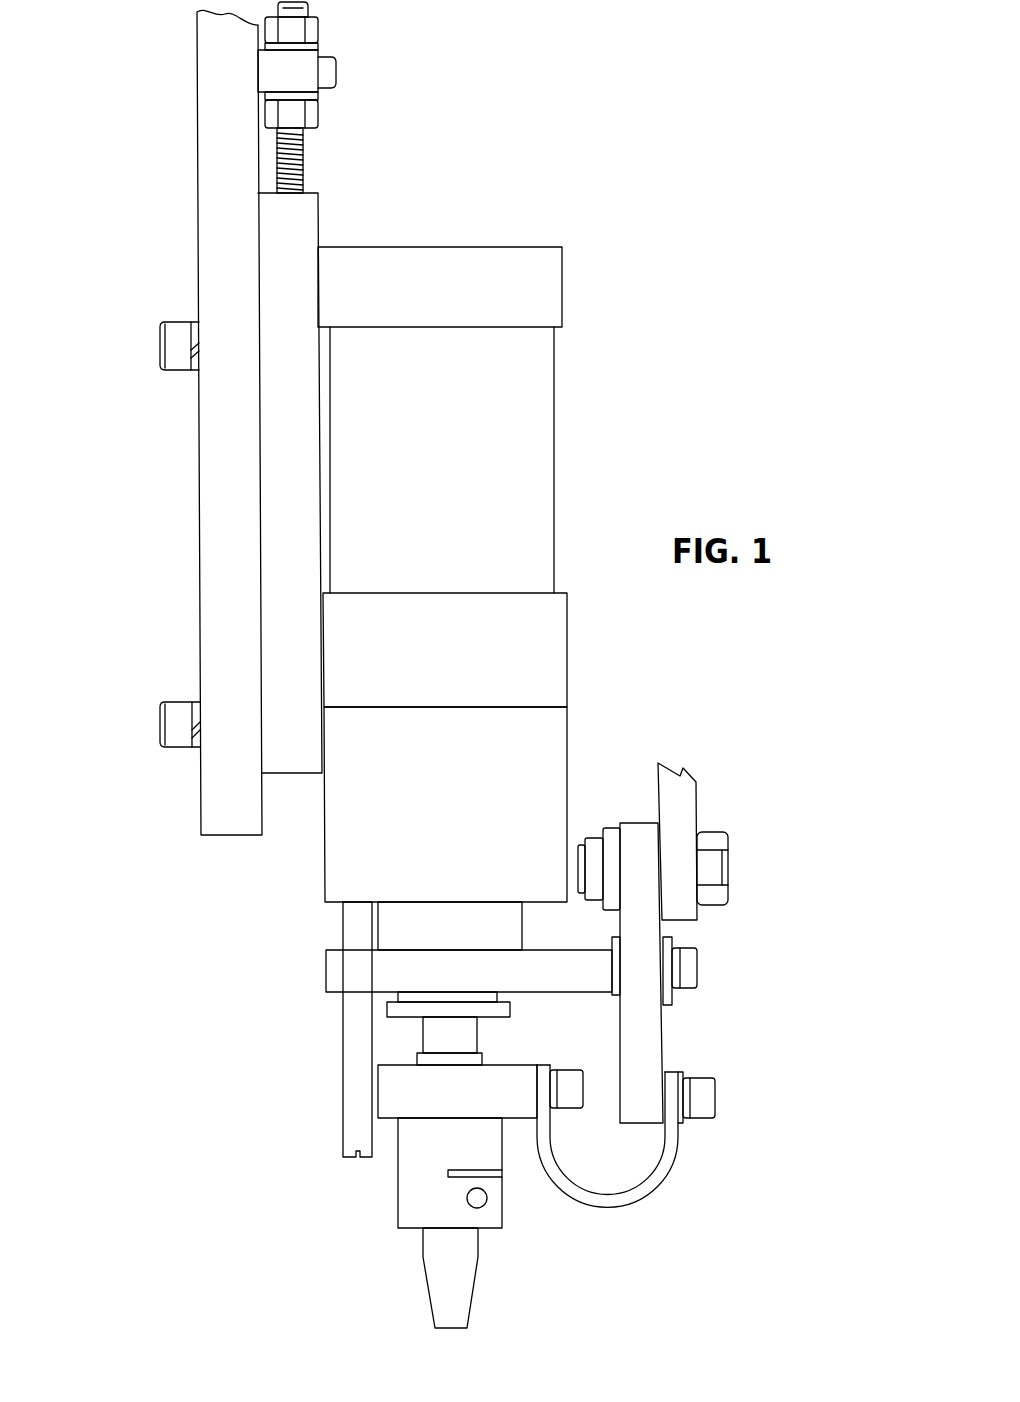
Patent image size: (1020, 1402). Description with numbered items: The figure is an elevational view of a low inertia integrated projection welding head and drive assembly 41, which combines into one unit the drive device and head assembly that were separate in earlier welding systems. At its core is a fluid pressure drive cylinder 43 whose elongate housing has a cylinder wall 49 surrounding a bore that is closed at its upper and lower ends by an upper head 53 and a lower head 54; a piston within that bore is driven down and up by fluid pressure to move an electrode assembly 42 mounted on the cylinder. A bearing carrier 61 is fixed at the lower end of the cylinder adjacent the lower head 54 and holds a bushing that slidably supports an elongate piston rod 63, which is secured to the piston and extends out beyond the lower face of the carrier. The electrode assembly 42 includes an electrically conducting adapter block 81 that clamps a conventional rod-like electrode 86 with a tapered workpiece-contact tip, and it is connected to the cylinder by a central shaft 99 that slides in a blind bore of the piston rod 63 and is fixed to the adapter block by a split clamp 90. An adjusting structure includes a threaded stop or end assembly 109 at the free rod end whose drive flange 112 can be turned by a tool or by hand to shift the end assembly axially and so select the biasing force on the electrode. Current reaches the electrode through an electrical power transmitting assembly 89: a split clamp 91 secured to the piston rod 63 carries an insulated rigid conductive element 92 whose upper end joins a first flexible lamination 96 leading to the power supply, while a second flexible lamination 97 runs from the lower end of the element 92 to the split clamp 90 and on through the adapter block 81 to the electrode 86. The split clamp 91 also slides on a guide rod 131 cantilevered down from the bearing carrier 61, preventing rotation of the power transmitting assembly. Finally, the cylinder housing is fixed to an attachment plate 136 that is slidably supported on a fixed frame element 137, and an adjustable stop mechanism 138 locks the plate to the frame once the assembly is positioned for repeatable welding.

The integrated projection welding head and drive assembly 41 is at (511, 540).
The electrode assembly 42 is at (540, 1206).
The fluid pressure drive cylinder 43 is at (479, 540).
The elongate cylinder wall 49 is at (554, 406).
The upper head 53 is at (425, 264).
The lower head 54 is at (545, 620).
The bearing carrier 61 is at (547, 745).
The piston rod 63 is at (386, 914).
The adapter block 81 is at (406, 1165).
The electrode 86 is at (466, 1265).
The electrical power transmitting assembly 89 is at (725, 940).
The split clamp 90 is at (386, 1085).
The split clamp 91 is at (337, 970).
The rigid conductive element 92 is at (651, 1031).
The first flexible electrically conductive cable or lamination 96 is at (684, 786).
The second flexible electrically conducting cable or lamination 97 is at (640, 1191).
The central shaft 99 is at (460, 1038).
The stop or end assembly 109 is at (388, 1010).
The drive flange 112 is at (512, 1011).
The guide rod 131 is at (352, 1017).
The attachment plate 136 is at (305, 205).
The fixed frame element 137 is at (210, 172).
The adjustable stop mechanism 138 is at (348, 52).